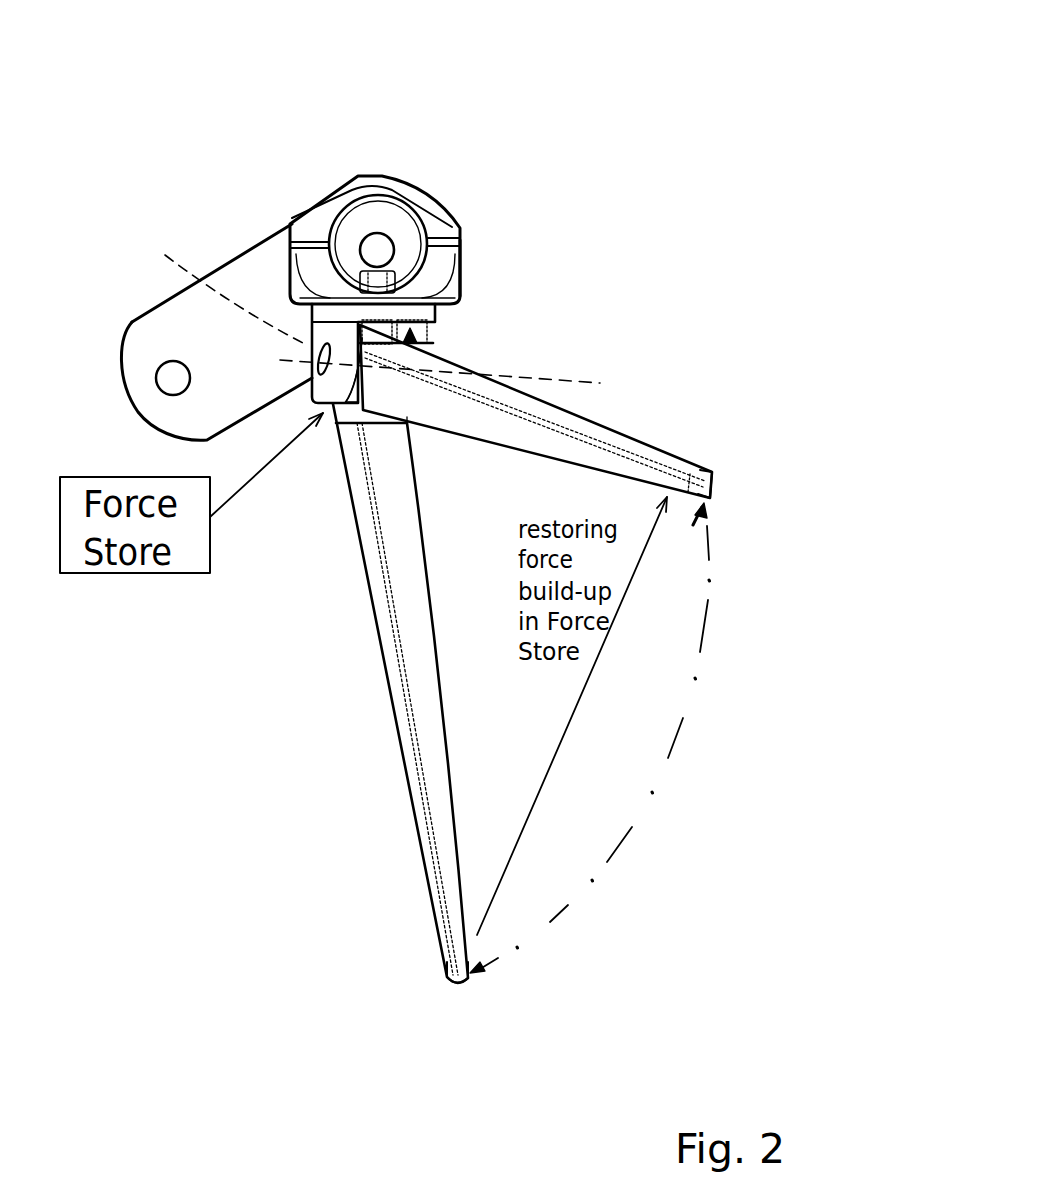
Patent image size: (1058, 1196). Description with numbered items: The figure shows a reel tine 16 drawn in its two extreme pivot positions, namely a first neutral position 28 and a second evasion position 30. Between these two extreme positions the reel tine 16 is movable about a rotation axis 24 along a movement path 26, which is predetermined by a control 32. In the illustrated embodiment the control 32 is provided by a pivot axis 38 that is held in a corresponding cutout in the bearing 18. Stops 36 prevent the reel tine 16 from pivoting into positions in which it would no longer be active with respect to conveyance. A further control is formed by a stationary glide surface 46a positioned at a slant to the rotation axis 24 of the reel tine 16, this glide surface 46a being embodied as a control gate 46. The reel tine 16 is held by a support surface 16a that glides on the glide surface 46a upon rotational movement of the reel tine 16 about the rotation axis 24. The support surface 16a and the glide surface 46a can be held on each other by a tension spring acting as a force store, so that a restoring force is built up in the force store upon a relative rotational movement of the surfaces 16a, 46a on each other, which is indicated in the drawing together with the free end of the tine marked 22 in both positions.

The reel tine 16 is at (781, 354).
The support surface 16a is at (364, 307).
The bearing 18 is at (344, 333).
The free ends of spring arms 22 is at (713, 477).
The rotation axis 24 is at (327, 458).
The pivot axis 38 is at (320, 489).
The movement path 26 is at (673, 743).
The first neutral position 28 is at (346, 767).
The second evasion position 30 is at (633, 393).
The control 32 is at (462, 338).
The stops 36 is at (430, 343).
The control gate 46 is at (421, 228).
The glide surface 46a is at (346, 345).